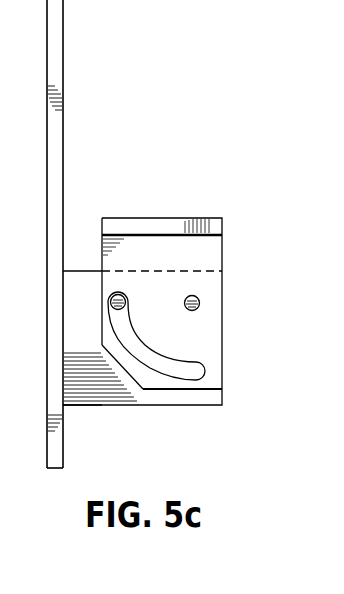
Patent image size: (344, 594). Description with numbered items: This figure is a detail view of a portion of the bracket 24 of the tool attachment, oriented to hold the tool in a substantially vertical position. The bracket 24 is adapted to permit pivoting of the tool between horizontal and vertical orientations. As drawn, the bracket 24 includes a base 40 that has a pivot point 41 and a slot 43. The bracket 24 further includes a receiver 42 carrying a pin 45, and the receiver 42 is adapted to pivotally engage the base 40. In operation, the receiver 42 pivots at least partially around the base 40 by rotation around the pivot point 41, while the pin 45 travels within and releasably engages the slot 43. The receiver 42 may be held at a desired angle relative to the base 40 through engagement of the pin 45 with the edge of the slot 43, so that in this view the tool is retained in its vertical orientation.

The bracket 24 is at (200, 433).
The base 40 is at (158, 226).
The pivot point 41 is at (200, 302).
The receiver 42 is at (128, 406).
The slot 43 is at (201, 370).
The pin 45 is at (111, 298).